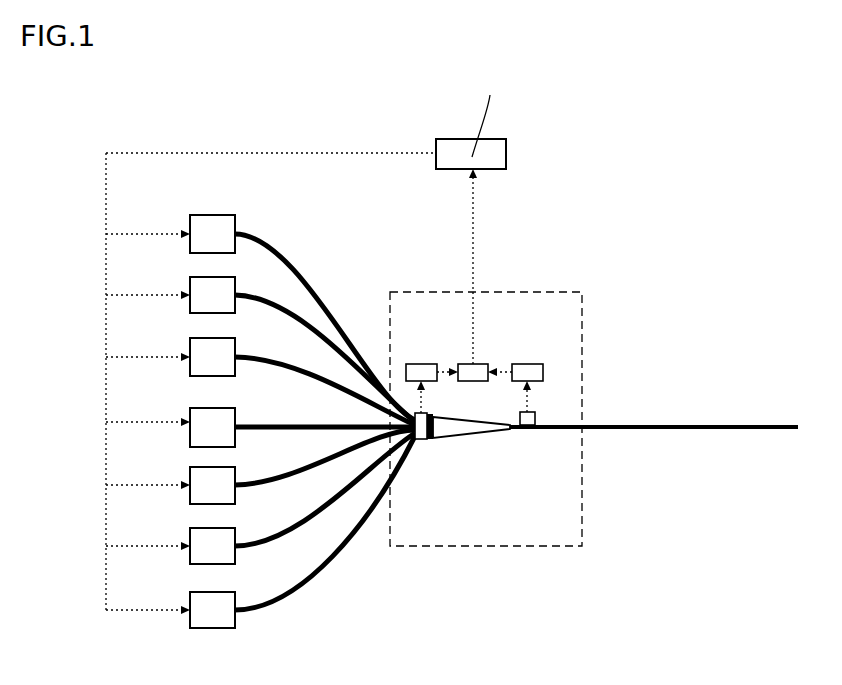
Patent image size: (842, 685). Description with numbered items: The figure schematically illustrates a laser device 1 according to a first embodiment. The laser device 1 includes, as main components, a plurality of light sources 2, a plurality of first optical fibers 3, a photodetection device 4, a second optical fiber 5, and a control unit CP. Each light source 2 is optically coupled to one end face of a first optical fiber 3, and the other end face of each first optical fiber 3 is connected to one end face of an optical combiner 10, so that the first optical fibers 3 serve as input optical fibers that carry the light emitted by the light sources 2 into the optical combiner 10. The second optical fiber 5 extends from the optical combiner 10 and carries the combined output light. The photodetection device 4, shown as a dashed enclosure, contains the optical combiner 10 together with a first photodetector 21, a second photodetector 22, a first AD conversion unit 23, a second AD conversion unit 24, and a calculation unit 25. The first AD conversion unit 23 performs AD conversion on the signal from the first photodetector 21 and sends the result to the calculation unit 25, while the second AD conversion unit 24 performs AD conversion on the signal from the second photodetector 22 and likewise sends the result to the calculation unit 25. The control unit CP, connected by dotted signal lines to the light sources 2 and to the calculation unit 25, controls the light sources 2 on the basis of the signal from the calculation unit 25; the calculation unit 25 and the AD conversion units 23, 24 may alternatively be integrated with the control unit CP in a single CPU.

The laser device 1 is at (714, 211).
The light source 2 is at (197, 223).
The first optical fiber 3 is at (270, 245).
The photodetection device 4 is at (552, 290).
The second optical fiber 5 is at (680, 427).
The optical combiner 10 is at (472, 428).
The first photodetector 21 is at (426, 445).
The second photodetector 22 is at (526, 428).
The first AD conversion unit 23 is at (419, 370).
The second AD conversion unit 24 is at (535, 370).
The calculation unit 25 is at (482, 370).